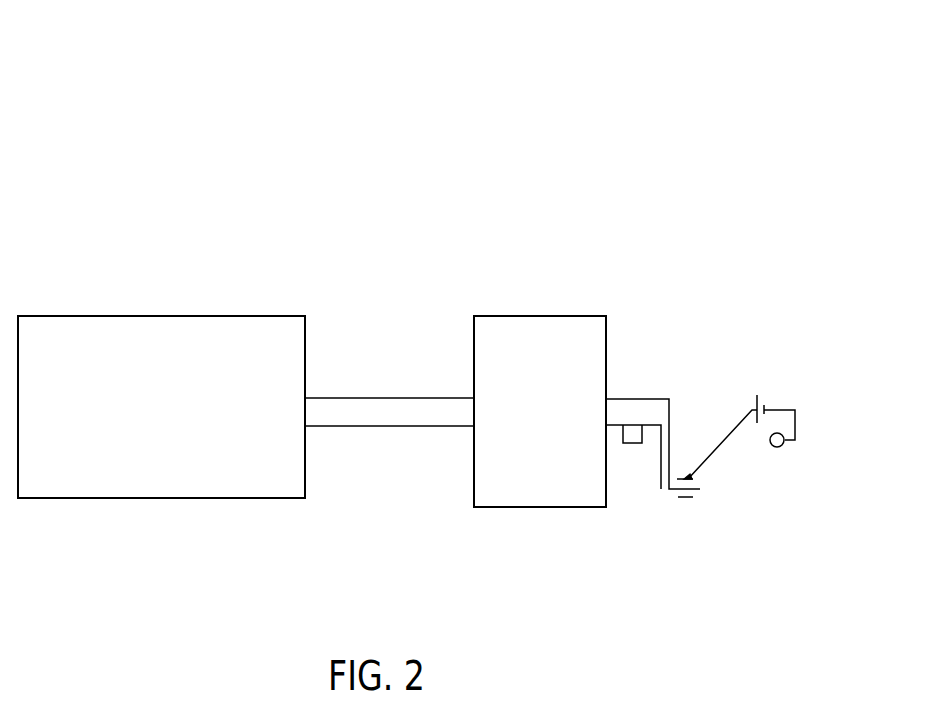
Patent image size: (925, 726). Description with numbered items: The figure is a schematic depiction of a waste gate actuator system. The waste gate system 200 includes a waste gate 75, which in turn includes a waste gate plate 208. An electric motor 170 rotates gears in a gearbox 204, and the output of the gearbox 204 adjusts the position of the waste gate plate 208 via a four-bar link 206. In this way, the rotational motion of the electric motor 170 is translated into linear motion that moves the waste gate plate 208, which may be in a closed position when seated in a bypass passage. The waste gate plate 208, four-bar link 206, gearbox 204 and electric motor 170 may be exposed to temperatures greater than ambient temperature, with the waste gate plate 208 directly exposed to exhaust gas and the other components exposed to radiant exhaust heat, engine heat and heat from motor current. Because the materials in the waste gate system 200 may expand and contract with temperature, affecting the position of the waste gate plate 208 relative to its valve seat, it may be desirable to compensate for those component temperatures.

The waste gate system 200 is at (146, 65).
The electric motor 170 is at (161, 407).
The gearbox 204 is at (540, 411).
The four-bar link 206 is at (728, 432).
The waste gate 75 is at (785, 382).
The waste gate plate 208 is at (778, 447).